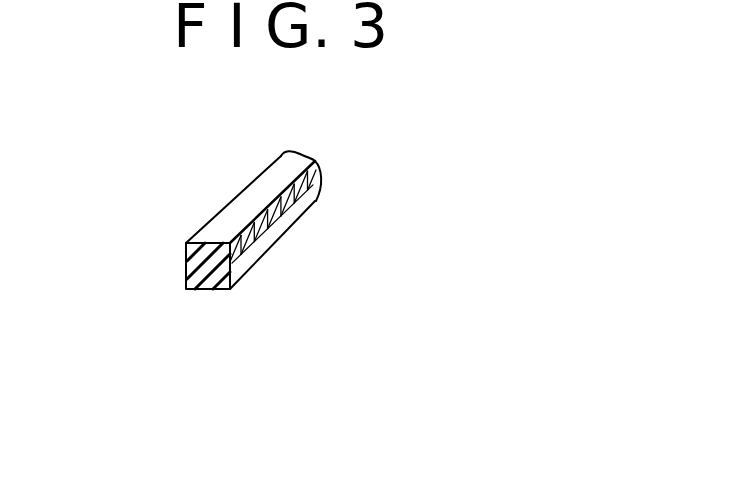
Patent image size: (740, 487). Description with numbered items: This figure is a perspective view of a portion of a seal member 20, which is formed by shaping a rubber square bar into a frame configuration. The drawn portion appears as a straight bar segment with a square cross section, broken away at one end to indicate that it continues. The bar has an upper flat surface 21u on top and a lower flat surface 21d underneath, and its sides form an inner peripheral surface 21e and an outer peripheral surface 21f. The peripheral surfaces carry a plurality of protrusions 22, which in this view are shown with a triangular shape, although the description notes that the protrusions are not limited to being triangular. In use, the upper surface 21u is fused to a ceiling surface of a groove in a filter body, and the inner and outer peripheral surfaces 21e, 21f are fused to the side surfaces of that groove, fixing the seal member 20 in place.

The seal member 20 is at (324, 162).
The upper flat surface 21u is at (240, 205).
The inner peripheral surface 21e is at (187, 268).
The lower flat surface 21d is at (205, 290).
The outer peripheral surface 21f is at (274, 208).
The protrusions 22 is at (318, 203).